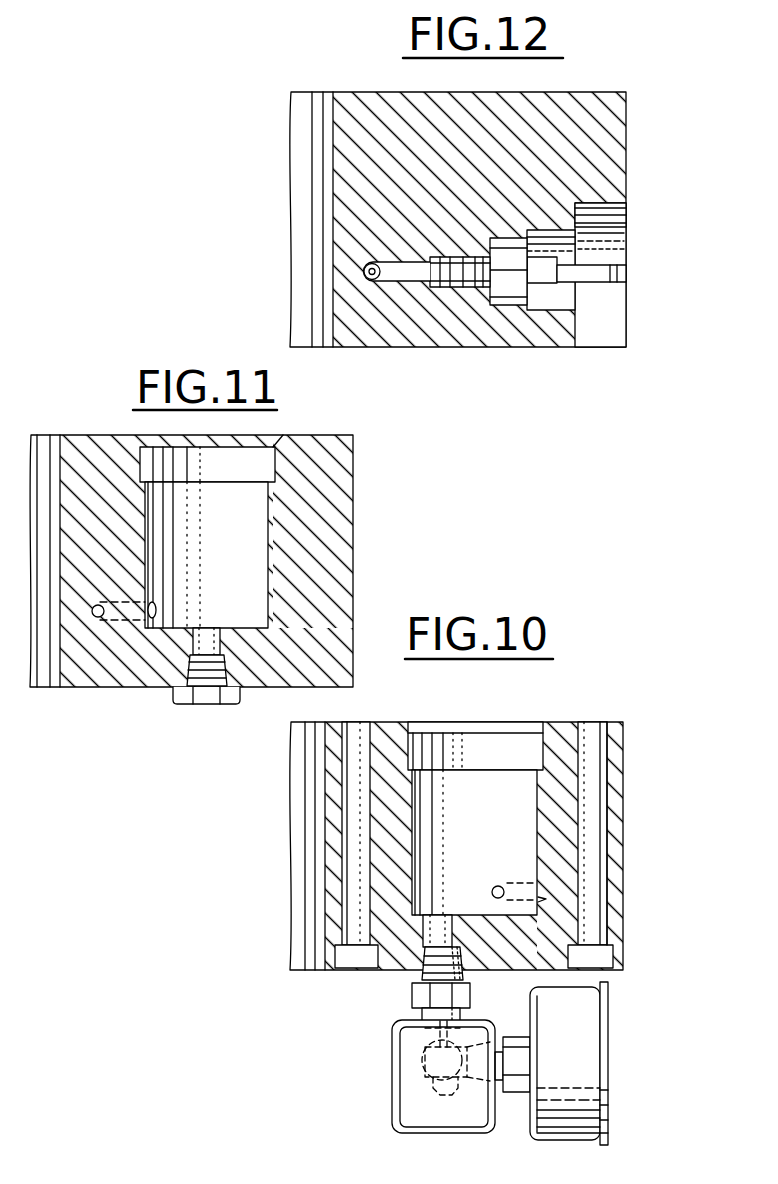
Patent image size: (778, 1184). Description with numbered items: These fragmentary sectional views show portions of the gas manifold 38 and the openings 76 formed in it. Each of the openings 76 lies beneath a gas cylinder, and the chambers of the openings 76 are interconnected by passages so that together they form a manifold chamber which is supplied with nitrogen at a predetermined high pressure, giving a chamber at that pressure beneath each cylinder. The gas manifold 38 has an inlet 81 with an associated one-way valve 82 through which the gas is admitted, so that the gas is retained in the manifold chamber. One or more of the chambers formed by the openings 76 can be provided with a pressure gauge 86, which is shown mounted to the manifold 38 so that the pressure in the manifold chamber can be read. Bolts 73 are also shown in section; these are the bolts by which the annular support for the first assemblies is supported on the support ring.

In FIG. 12, the gas manifold 38 is at (640, 164).
In FIG. 11, the gas manifold 38 is at (370, 540).
In FIG. 10, the gas manifold 38 is at (636, 928).
In FIG. 12, the bolts 73 is at (364, 272).
In FIG. 11, the bolts 73 is at (156, 611).
In FIG. 11, the openings 76 is at (268, 520).
In FIG. 10, the openings 76 is at (537, 825).
In FIG. 12, the inlet 81 is at (577, 253).
In FIG. 12, the one-way valve 82 is at (510, 285).
In FIG. 10, the pressure gauge 86 is at (583, 1070).